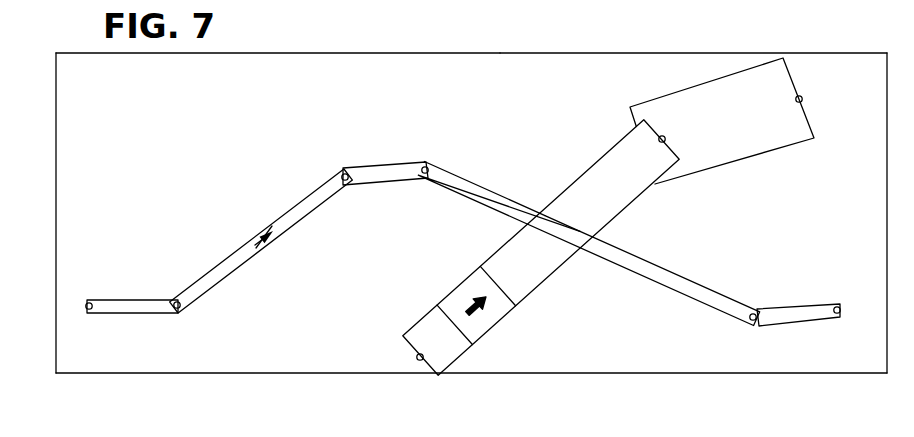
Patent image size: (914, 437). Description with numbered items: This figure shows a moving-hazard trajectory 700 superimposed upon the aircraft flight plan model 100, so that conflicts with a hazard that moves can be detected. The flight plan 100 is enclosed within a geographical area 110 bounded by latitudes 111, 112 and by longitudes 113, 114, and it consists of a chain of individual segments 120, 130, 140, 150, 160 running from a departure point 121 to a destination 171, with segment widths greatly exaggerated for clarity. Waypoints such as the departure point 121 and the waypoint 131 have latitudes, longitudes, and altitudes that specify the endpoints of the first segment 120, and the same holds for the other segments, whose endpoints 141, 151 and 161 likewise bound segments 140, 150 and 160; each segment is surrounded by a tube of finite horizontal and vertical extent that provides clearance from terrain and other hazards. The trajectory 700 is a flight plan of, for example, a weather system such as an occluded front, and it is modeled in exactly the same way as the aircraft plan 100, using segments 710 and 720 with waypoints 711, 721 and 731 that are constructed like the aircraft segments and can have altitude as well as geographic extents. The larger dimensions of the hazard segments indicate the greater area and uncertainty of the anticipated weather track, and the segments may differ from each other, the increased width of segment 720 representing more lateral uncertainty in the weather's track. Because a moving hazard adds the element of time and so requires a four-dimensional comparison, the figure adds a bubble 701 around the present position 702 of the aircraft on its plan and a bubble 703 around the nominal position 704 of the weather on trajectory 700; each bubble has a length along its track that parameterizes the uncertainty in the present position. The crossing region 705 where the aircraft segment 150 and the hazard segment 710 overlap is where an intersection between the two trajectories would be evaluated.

The flight plan representation or model 100 is at (191, 237).
The geographical area 110 is at (397, 55).
The latitude 111 is at (165, 374).
The latitude 112 is at (642, 53).
The longitude 113 is at (56, 90).
The longitude 114 is at (887, 86).
The segment 120 is at (134, 299).
The departure point 121 is at (88, 291).
The segment 130 is at (233, 251).
The waypoint 131 is at (176, 322).
The segment 140 is at (383, 164).
The endpoint 141 is at (333, 160).
The segment 150 is at (487, 188).
The endpoint 151 is at (444, 156).
The segment 160 is at (795, 306).
The waypoint 161 is at (758, 335).
The destination 171 is at (843, 293).
The moving-hazard trajectory 700 is at (668, 203).
The bubble 701 is at (272, 226).
The present position 702 is at (270, 238).
The bubble 703 is at (496, 284).
The nominal position 704 is at (469, 300).
The intersection of track and arm 705 is at (562, 230).
The segment 710 is at (537, 286).
The waypoint 711 is at (400, 357).
The segment 720 is at (732, 163).
The waypoint 721 is at (630, 123).
The waypoint 731 is at (820, 98).